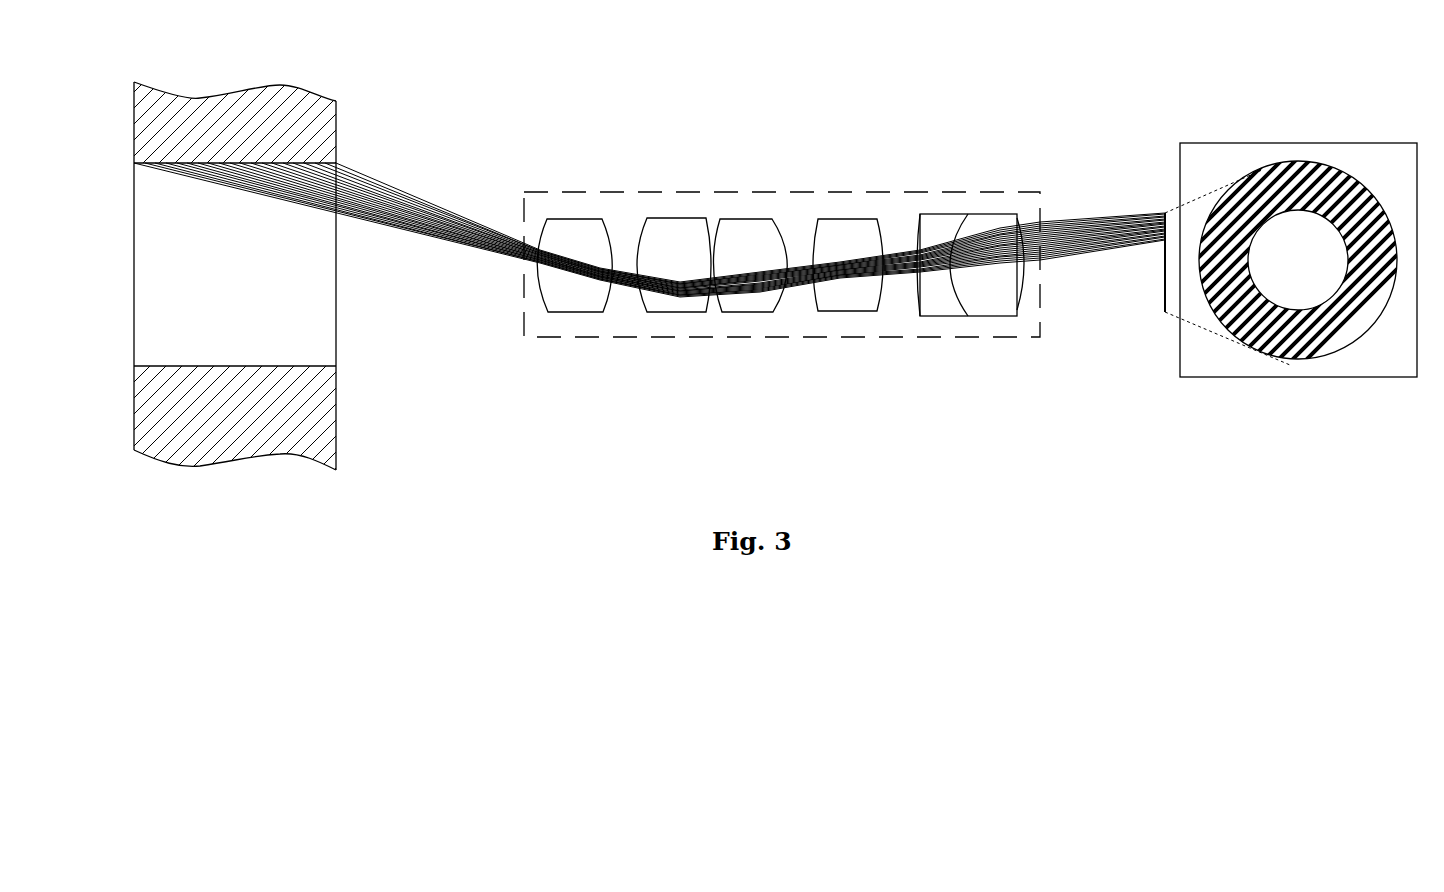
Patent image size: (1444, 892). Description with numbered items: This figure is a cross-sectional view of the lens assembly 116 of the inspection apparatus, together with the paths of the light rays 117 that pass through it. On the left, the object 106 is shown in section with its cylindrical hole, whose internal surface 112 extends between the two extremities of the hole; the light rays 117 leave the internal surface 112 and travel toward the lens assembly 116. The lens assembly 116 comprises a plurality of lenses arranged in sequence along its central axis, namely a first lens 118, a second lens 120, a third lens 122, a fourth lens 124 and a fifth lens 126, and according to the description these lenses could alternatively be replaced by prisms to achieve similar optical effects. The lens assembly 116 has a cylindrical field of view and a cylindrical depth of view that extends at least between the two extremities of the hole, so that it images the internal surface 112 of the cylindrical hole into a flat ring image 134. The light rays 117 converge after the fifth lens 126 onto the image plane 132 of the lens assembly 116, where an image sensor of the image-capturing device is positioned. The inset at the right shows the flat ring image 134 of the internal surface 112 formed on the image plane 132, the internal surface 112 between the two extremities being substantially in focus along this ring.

The object 106 is at (336, 130).
The internal surface 112 is at (288, 358).
The lens assembly 116 is at (1047, 185).
The light rays 117 is at (397, 193).
The first lens 118 is at (575, 217).
The second lens 120 is at (678, 217).
The third lens 122 is at (777, 213).
The fourth lens 124 is at (870, 218).
The fifth lens 126 is at (967, 217).
The image plane 132 is at (1162, 287).
The flat ring image 134 is at (1312, 163).